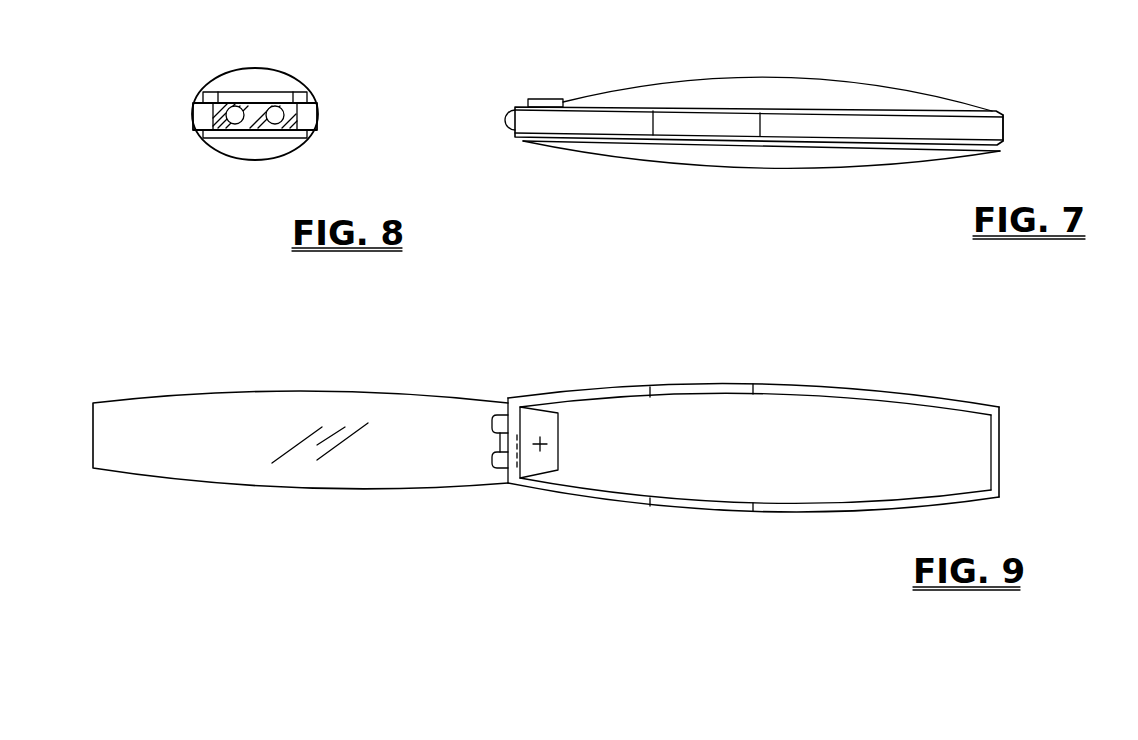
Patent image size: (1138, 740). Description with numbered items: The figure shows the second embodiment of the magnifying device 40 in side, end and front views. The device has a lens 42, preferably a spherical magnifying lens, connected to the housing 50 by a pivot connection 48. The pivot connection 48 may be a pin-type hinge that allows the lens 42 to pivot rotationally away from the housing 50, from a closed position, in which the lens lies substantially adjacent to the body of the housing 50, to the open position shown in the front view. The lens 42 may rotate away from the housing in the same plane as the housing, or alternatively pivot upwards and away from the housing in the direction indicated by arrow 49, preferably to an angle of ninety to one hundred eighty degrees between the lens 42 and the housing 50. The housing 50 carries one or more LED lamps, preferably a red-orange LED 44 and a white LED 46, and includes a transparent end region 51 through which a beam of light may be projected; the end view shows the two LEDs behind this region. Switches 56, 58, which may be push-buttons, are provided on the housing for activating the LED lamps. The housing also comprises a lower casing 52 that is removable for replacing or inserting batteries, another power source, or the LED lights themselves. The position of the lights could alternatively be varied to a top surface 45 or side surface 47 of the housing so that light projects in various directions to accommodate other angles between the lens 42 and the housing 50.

In FIG. 8, the magnifying device 40 is at (176, 91).
In FIG. 7, the magnifying device 40 is at (492, 78).
In FIG. 9, the magnifying device 40 is at (1050, 392).
In FIG. 8, the lens 42 is at (242, 80).
In FIG. 7, the lens 42 is at (793, 77).
In FIG. 9, the lens 42 is at (215, 413).
In FIG. 8, the red-orange LED 44 is at (238, 122).
In FIG. 9, the red-orange LED 44 is at (498, 415).
In FIG. 7, the top surface 45 is at (520, 106).
In FIG. 8, the white LED 46 is at (276, 122).
In FIG. 9, the white LED 46 is at (503, 468).
In FIG. 7, the side surface 47 is at (562, 122).
In FIG. 7, the pivot connection 48 is at (546, 97).
In FIG. 9, the pivot connection 48 is at (513, 423).
In FIG. 7, the arrow 49 is at (982, 100).
In FIG. 8, the housing 50 is at (317, 117).
In FIG. 7, the housing 50 is at (1003, 130).
In FIG. 9, the housing 50 is at (999, 460).
In FIG. 8, the transparent end region 51 is at (222, 110).
In FIG. 8, the lower casing 52 is at (218, 147).
In FIG. 7, the lower casing 52 is at (848, 162).
In FIG. 9, the switch 56 is at (688, 388).
In FIG. 9, the switch 58 is at (687, 511).